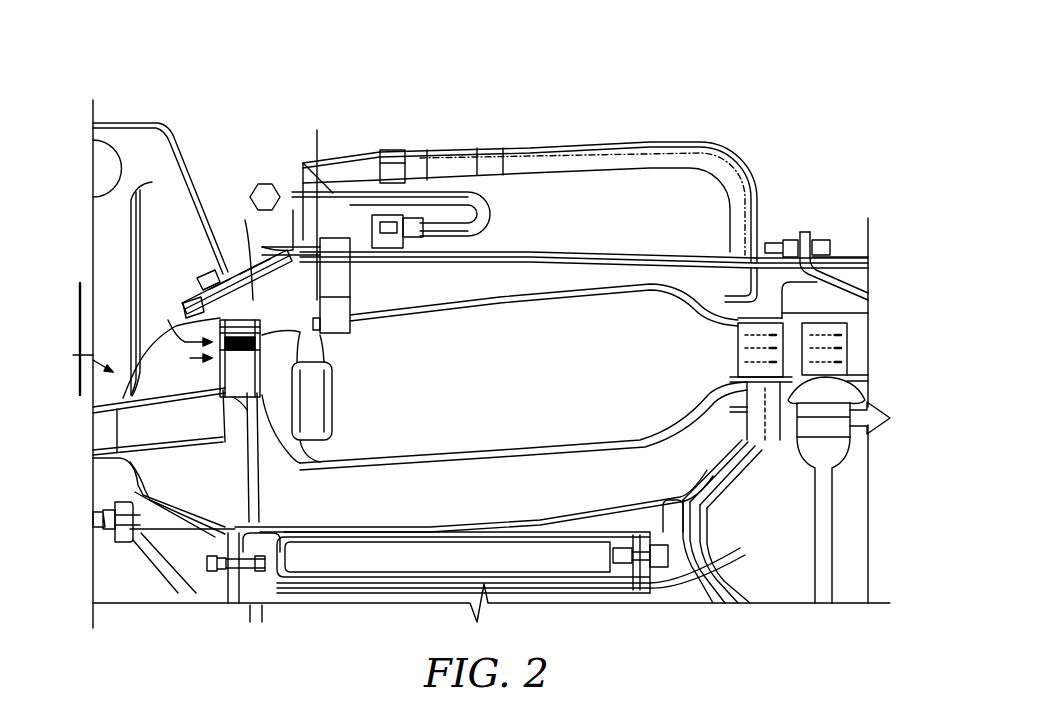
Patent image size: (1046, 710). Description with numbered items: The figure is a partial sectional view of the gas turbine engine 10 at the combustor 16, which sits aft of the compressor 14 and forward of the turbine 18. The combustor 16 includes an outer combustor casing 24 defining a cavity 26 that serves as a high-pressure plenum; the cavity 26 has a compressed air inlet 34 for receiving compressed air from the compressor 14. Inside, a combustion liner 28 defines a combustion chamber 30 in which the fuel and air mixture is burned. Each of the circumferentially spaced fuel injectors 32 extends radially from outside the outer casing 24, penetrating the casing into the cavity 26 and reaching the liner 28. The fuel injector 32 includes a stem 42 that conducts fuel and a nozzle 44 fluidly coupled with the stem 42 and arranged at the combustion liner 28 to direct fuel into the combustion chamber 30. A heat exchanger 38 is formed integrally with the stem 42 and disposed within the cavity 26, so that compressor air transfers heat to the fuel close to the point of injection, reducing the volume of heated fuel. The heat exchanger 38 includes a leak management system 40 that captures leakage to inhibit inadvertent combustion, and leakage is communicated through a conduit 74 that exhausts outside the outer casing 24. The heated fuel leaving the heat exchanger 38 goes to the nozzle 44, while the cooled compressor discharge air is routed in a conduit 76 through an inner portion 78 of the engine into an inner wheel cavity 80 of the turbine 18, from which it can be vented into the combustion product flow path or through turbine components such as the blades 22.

The gas turbine engine 10 is at (858, 105).
The compressor 14 is at (118, 390).
The combustor 16 is at (610, 213).
The turbine 18 is at (840, 238).
The blades 22 is at (838, 331).
The outer combustor casing 24 is at (548, 246).
The cavity 26 is at (487, 291).
The combustion liner 28 is at (617, 283).
The combustion chamber 30 is at (522, 394).
The fuel injectors 32 is at (205, 175).
The compressed air inlet 34 is at (155, 423).
The heat exchanger 38 is at (168, 320).
The leak management system 40 is at (190, 359).
The stem 42 is at (367, 202).
The nozzle 44 is at (333, 378).
The conduit 74 is at (351, 298).
The conduit 76 is at (262, 505).
The inner portion 78 is at (387, 608).
The inner wheel cavity 80 is at (788, 564).